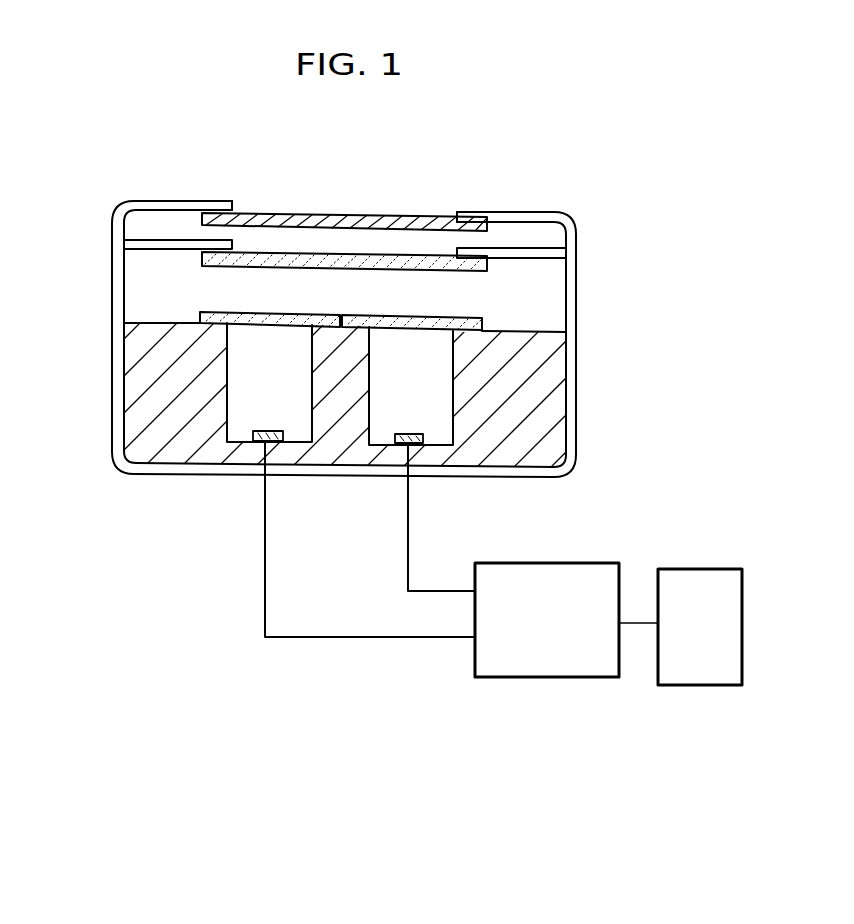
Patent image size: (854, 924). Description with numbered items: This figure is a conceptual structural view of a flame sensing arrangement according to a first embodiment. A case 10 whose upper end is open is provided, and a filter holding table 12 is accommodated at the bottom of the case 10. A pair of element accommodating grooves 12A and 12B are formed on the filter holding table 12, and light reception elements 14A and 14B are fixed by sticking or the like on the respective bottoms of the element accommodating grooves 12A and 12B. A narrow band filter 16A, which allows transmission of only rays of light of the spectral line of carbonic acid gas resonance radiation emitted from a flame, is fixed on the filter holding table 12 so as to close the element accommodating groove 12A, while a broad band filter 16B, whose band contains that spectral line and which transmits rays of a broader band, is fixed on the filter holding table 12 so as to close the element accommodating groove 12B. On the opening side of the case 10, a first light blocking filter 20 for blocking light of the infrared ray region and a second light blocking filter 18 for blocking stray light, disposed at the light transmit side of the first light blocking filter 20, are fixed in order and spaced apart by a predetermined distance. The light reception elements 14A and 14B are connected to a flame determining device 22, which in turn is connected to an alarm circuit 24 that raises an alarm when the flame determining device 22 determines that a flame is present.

The case 10 is at (576, 387).
The filter holding table 12 is at (543, 432).
The element accommodating groove 12A is at (227, 405).
The element accommodating groove 12B is at (369, 410).
The light reception element 14A is at (253, 441).
The light reception element 14B is at (423, 443).
The narrow band filter 16A is at (220, 313).
The broad band filter 16B is at (473, 318).
The second light blocking filter 18 is at (415, 258).
The first light blocking filter 20 is at (300, 213).
The flame determining device 22 is at (538, 678).
The alarm circuit 24 is at (690, 686).